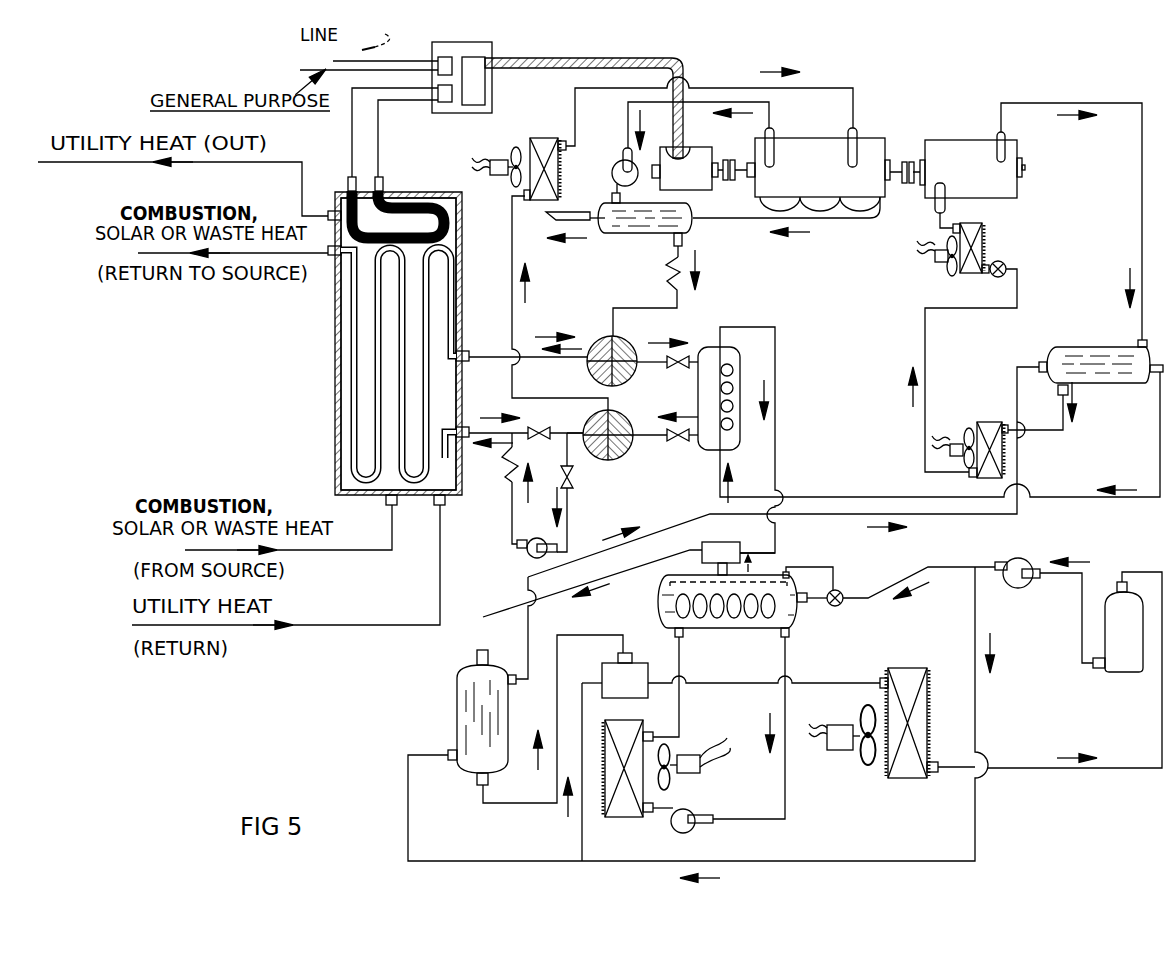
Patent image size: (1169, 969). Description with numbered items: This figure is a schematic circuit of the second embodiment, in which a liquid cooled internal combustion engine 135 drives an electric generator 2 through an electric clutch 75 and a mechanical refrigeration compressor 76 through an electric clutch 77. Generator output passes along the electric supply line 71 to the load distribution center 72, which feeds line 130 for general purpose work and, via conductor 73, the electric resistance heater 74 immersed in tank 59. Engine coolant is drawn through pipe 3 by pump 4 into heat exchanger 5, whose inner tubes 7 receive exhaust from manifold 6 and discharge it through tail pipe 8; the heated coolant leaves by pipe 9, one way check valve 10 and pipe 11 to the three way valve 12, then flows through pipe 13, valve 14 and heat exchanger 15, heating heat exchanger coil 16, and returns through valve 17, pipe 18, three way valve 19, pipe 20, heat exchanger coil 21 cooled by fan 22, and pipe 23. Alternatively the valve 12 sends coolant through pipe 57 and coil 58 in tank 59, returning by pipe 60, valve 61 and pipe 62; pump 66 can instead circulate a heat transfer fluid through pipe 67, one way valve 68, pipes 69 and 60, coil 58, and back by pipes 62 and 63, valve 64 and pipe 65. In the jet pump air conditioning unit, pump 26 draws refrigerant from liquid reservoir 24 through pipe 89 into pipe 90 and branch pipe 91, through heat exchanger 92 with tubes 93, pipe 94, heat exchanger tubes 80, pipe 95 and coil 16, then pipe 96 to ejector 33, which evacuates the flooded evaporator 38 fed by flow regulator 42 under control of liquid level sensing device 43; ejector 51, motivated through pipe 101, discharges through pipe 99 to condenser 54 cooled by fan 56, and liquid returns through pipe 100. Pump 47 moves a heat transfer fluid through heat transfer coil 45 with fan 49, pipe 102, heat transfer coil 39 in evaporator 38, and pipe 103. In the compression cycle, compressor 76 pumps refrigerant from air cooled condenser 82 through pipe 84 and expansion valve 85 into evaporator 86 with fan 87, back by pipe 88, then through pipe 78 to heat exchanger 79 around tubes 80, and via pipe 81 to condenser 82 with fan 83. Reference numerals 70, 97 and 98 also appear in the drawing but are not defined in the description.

The electric generator 2 is at (701, 148).
The pipe 3 is at (626, 105).
The pump 4 is at (619, 165).
The heat exchanger 5 is at (644, 234).
The manifold 6 is at (843, 221).
The inner tubes 7 is at (616, 222).
The tail pipe 8 is at (569, 213).
The pipe 9 is at (684, 251).
The one way check valve 10 is at (668, 268).
The pipe 11 is at (672, 309).
The three way valve 12 is at (598, 347).
The pipe 13 is at (645, 363).
The valve 14 is at (681, 368).
The heat exchanger 15 is at (707, 347).
The heat exchanger coil 16 is at (733, 381).
The valve 17 is at (683, 443).
The pipe 18 is at (650, 437).
The three way valve 19 is at (608, 460).
The pipe 20 is at (548, 397).
The heat exchanger coil 21 is at (543, 137).
The thermostatically controlled motor-driven fan 22 is at (500, 159).
The pipe 23 is at (848, 86).
The liquid reservoir 24 is at (1131, 673).
The pump 26 is at (1029, 583).
The ejector 33 is at (730, 542).
The flooded type evaporator 38 is at (710, 628).
The heat transfer coil 39 is at (763, 613).
The flow regulator 42 is at (840, 607).
The liquid level sensing device 43 is at (812, 570).
The heat transfer coil 45 is at (630, 818).
The pump 47 is at (690, 829).
The motor operated fan 49 is at (701, 770).
The ejector 51 is at (645, 661).
The condenser 54 is at (917, 667).
The motor operated fan 56 is at (847, 751).
The pipe 57 is at (475, 354).
The coil 58 is at (448, 252).
The tank 59 is at (458, 306).
The pipe 60 is at (480, 430).
The valve 61 is at (539, 428).
The pipe 62 is at (571, 432).
The pipe 63 is at (567, 458).
The valve 64 is at (561, 480).
The pipe 65 is at (570, 523).
The pump 66 is at (527, 556).
The pipe 67 is at (512, 528).
The one way valve 68 is at (509, 471).
The pipe 69 is at (506, 451).
The heat exchange coil 70 is at (353, 401).
The electric supply line 71 is at (621, 59).
The load distribution center 72 is at (472, 41).
The conductor 73 is at (378, 161).
The electric resistance heater 74 is at (413, 212).
The electric clutch 75 is at (731, 180).
The mechanical refrigeration compressor 76 is at (1018, 188).
The electric clutch 77 is at (907, 161).
The pipe 78 is at (1142, 140).
The heat exchanger 79 is at (1137, 386).
The heat exchanger tubes 80 is at (1085, 353).
The pipe 81 is at (1045, 432).
The air cooled condenser 82 is at (993, 423).
The motor operated fan 83 is at (955, 440).
The pipe 84 is at (926, 340).
The expansion valve 85 is at (1005, 265).
The evaporator 86 is at (984, 228).
The motor operated fan 87 is at (938, 262).
The pipe 88 is at (939, 228).
The pipe 89 is at (1081, 633).
The pipe 90 is at (963, 566).
The pipe 91 is at (975, 612).
The heat exchanger 92 is at (457, 722).
The heat exchanger tubes 93 is at (476, 685).
The pipe 94 is at (1018, 469).
The pipe 95 is at (851, 498).
The pipe 96 is at (776, 423).
The line 97 is at (556, 592).
The line 98 is at (525, 806).
The pipe 99 is at (717, 682).
The pipe 100 is at (1123, 572).
The pipe 101 is at (582, 684).
The pipe 102 is at (679, 710).
The pipe 103 is at (786, 798).
The line 130 is at (339, 27).
The liquid cooled internal combustion engine 135 is at (803, 139).